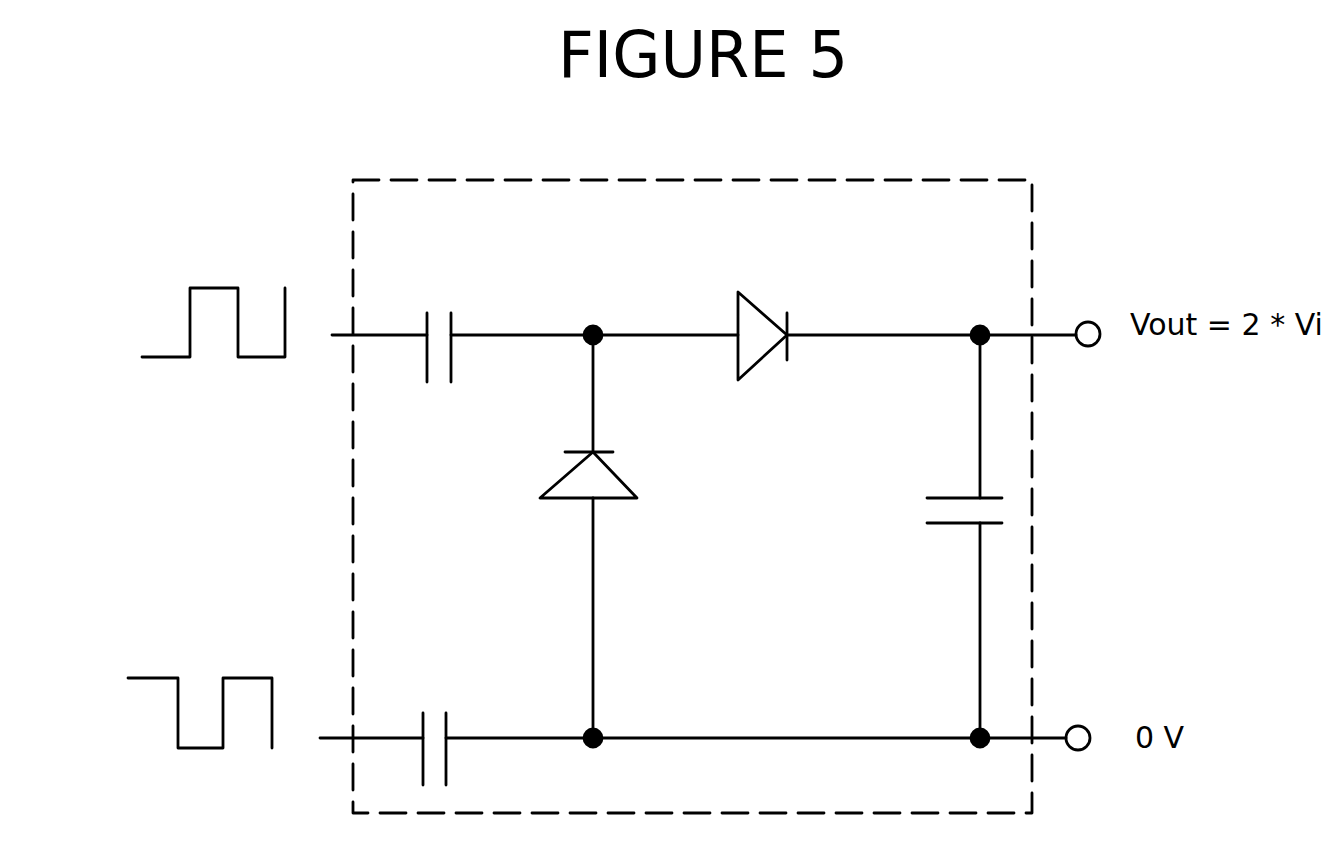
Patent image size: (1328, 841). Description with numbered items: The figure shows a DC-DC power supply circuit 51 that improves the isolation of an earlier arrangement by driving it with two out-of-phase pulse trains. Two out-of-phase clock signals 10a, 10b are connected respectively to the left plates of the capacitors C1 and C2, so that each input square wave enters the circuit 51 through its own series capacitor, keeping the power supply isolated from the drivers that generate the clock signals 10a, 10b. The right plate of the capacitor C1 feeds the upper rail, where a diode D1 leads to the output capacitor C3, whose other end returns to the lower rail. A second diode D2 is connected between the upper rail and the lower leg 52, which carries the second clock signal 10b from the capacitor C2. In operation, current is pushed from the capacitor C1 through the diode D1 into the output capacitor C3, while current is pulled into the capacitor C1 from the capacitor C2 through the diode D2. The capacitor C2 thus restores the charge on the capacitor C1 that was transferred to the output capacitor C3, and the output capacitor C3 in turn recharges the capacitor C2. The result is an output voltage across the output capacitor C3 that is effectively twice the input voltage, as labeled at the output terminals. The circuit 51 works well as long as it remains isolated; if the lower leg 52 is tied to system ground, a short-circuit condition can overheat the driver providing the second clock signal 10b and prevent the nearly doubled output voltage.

The DC-DC power supply circuit 51 is at (692, 466).
The lower leg 52 is at (705, 696).
The first clock signal 10a is at (191, 282).
The second clock signal 10b is at (166, 673).
The capacitor C1 is at (417, 300).
The capacitor C2 is at (411, 700).
The output capacitor C3 is at (942, 536).
The diode D1 is at (749, 287).
The diode D2 is at (565, 536).